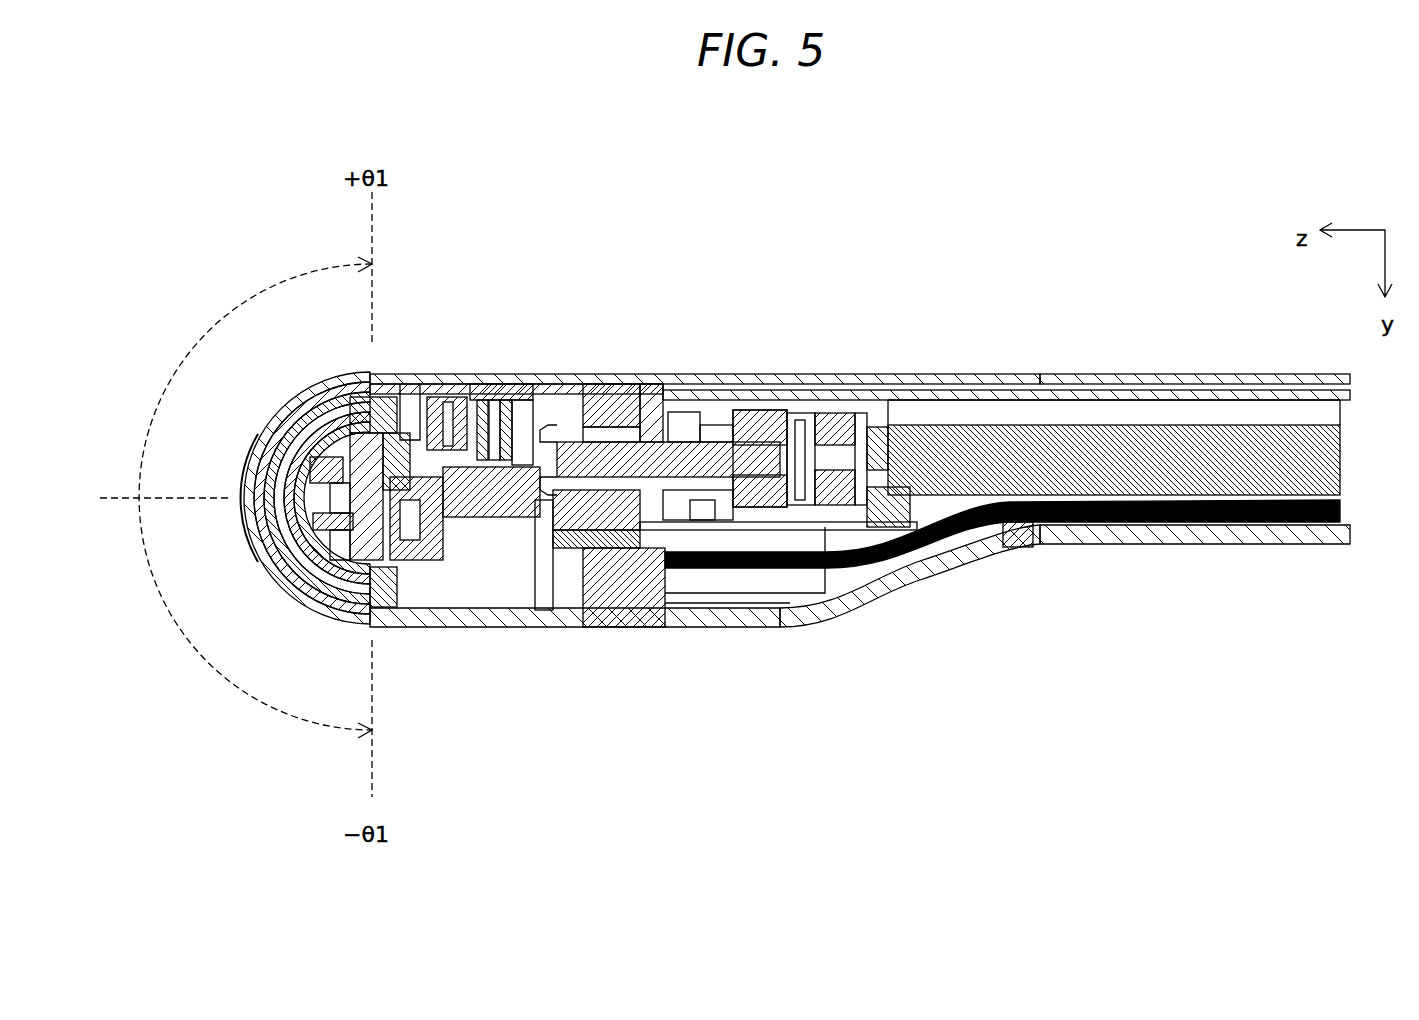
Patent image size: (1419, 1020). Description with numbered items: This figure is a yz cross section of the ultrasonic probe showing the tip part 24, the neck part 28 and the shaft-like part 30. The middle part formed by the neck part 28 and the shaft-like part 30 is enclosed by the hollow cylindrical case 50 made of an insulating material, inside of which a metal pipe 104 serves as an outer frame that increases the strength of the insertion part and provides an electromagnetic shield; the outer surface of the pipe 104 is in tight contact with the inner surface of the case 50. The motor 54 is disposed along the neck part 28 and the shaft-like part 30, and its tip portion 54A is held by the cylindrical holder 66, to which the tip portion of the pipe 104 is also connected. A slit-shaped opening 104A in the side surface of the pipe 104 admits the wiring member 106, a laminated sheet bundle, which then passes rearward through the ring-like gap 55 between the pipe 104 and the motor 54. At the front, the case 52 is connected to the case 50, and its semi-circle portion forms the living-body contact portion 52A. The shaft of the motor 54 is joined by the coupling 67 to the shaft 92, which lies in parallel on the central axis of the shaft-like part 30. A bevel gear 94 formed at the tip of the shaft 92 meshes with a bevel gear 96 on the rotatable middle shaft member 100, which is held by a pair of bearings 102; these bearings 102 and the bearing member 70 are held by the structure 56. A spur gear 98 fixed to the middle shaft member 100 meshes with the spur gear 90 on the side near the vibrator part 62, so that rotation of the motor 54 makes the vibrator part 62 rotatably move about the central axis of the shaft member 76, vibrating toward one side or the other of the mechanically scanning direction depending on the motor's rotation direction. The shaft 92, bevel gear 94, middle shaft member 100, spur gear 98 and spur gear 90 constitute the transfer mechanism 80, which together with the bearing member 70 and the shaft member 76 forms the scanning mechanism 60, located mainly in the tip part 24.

The tip part 24 is at (561, 270).
The neck part 28 is at (937, 612).
The shaft-like part 30 is at (1032, 156).
The case 50 is at (1222, 376).
The case 52 is at (497, 374).
The living-body contact portion 52A is at (243, 486).
The motor 54 is at (1092, 427).
The tip portion of the motor 54A is at (840, 440).
The gap 55 is at (1260, 412).
The structure 56 is at (618, 628).
The scanning mechanism 60 is at (455, 580).
The vibrator part 62 is at (416, 592).
The holder 66 is at (897, 380).
The coupling 67 is at (783, 385).
The bearing member 70 is at (432, 552).
The shaft member 76 is at (372, 562).
The transfer mechanism 80 is at (422, 381).
The spur gear 90 is at (400, 440).
The shaft 92 is at (712, 388).
The bevel gear 94 is at (558, 384).
The bevel gear 96 is at (530, 396).
The spur gear 98 is at (443, 432).
The middle shaft member 100 is at (498, 540).
The bearings 102 is at (553, 548).
The pipe 104 is at (1145, 395).
The opening 104A is at (1050, 527).
The wiring member 106 is at (802, 575).